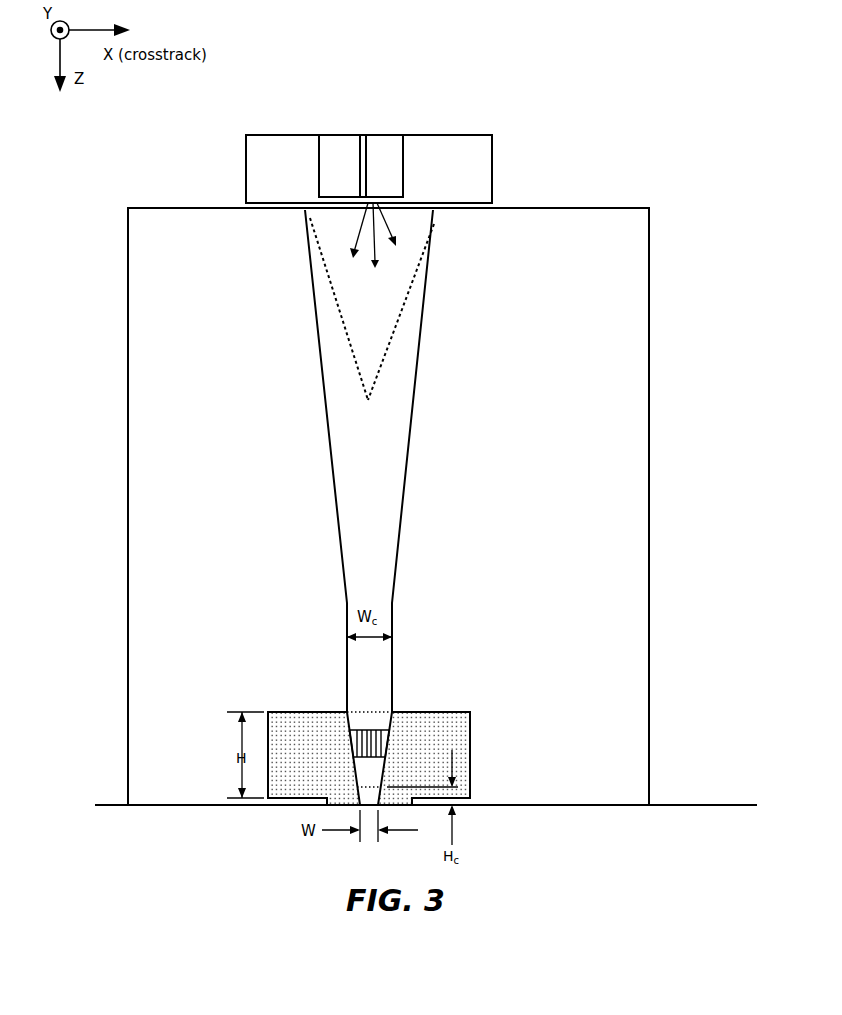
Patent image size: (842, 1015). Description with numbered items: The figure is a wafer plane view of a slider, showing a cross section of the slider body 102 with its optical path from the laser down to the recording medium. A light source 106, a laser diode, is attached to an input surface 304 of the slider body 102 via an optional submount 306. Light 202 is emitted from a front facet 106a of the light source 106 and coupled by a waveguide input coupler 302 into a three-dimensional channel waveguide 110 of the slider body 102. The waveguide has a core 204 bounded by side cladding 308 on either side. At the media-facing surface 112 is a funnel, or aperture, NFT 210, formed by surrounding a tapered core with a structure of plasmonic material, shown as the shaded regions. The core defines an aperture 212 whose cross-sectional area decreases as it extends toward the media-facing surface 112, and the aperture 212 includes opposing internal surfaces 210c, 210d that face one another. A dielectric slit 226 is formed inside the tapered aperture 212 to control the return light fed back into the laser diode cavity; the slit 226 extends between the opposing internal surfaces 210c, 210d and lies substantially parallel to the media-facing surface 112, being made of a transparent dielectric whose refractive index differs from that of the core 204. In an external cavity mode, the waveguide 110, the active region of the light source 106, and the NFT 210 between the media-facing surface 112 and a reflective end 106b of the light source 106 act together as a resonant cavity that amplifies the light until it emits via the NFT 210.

The slider body 102 is at (632, 263).
The light source 106 is at (403, 170).
The front facet 106a is at (358, 205).
The reflective end 106b is at (362, 200).
The three-dimensional channel waveguide 110 is at (337, 461).
The media-facing surface 112 is at (717, 806).
The light 202 is at (378, 248).
The core 204 is at (407, 440).
The funnel (aperture) NFT 210 is at (287, 712).
The opposing internal surface 210c is at (347, 728).
The opposing internal surface 210d is at (392, 728).
The aperture 212 is at (365, 718).
The dielectric slit 226 is at (378, 735).
The waveguide input coupler 302 is at (348, 333).
The input surface 304 is at (565, 208).
The submount 306 is at (262, 160).
The side cladding 308 is at (310, 515).